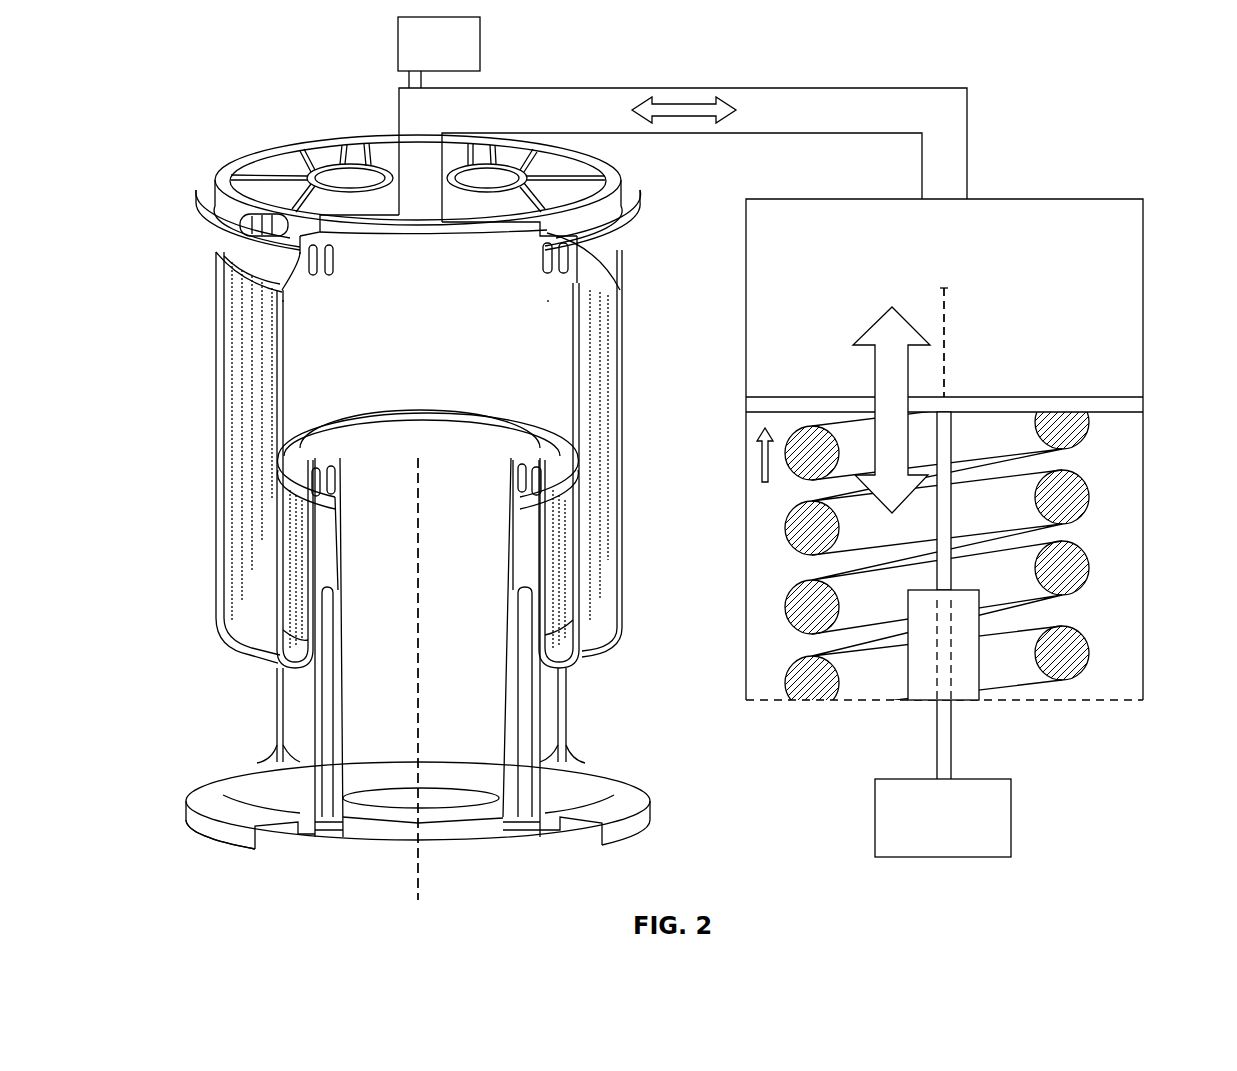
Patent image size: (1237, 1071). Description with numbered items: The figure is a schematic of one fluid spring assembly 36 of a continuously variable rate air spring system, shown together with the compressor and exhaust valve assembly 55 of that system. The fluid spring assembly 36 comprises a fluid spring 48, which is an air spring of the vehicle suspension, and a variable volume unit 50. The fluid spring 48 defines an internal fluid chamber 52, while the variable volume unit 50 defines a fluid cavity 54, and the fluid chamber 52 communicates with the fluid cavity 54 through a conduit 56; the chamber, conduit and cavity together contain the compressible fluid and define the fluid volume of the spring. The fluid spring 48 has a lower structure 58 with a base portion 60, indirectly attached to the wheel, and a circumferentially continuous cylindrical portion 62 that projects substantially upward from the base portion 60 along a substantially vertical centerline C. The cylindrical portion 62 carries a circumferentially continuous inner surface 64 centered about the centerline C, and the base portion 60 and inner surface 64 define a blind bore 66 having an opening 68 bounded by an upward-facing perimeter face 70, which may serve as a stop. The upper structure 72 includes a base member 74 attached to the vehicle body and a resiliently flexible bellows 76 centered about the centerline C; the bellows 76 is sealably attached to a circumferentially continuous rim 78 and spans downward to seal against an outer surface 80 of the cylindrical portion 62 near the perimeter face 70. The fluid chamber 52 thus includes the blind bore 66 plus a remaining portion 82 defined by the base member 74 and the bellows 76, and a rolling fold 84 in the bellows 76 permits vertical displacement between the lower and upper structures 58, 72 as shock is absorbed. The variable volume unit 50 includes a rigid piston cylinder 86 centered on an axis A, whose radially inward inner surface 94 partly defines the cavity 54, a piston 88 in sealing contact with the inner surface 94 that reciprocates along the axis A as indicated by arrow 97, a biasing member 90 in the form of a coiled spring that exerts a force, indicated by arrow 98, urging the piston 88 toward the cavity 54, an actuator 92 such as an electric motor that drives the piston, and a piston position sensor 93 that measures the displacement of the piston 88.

The fluid spring assembly 36 is at (1148, 82).
The fluid spring 48 is at (254, 92).
The variable volume unit 50 is at (1150, 168).
The fluid chamber 52 is at (415, 335).
The fluid cavity 54 is at (947, 315).
The compressor and exhaust valve assembly 55 is at (490, 43).
The conduit 56 is at (683, 88).
The lower structure 58 is at (426, 806).
The base portion 60 is at (628, 842).
The circumferentially continuous portion 62 is at (568, 702).
The inner surface 64 is at (408, 553).
The blind bore 66 is at (393, 679).
The opening 68 is at (345, 435).
The perimeter face 70 is at (537, 440).
The upper structure 72 is at (200, 222).
The base member 74 is at (305, 138).
The bellows 76 is at (216, 472).
The rim 78 is at (545, 283).
The outer surface 80 is at (292, 700).
The remaining portion 82 is at (329, 269).
The rolling fold 84 is at (402, 462).
The piston cylinder 86 is at (1146, 312).
The piston 88 is at (1018, 390).
The biasing member 90 is at (1088, 497).
The actuator 92 is at (1013, 818).
The piston position sensor 93 is at (990, 610).
The inner surface 94 is at (748, 318).
The arrow 97 is at (876, 372).
The arrow 98 is at (752, 470).
The axis A is at (950, 298).
The centerline C is at (420, 855).